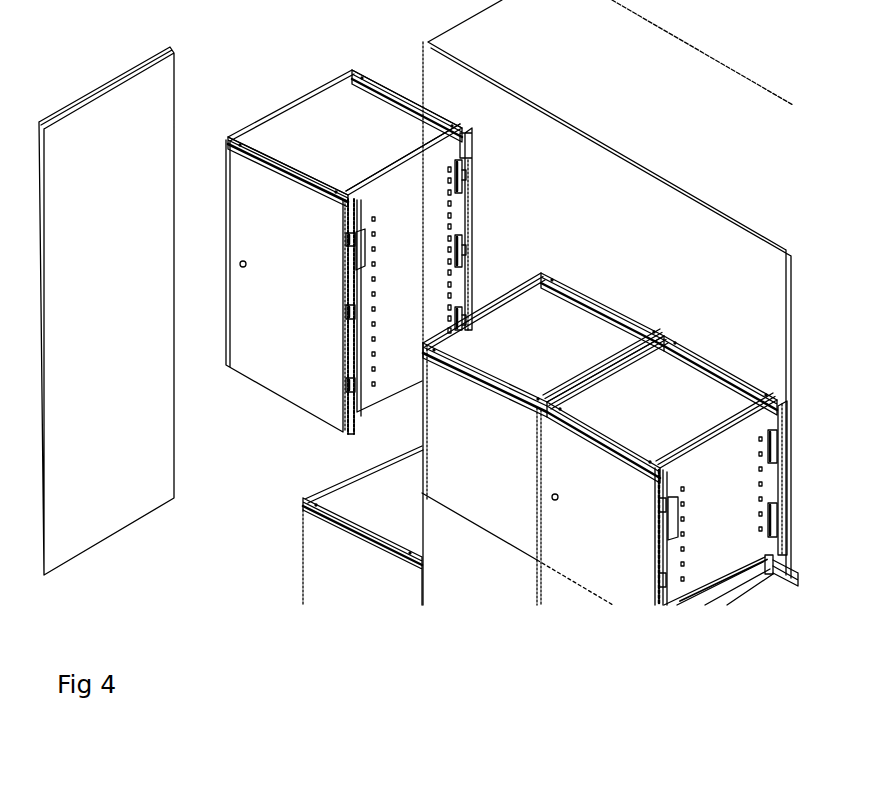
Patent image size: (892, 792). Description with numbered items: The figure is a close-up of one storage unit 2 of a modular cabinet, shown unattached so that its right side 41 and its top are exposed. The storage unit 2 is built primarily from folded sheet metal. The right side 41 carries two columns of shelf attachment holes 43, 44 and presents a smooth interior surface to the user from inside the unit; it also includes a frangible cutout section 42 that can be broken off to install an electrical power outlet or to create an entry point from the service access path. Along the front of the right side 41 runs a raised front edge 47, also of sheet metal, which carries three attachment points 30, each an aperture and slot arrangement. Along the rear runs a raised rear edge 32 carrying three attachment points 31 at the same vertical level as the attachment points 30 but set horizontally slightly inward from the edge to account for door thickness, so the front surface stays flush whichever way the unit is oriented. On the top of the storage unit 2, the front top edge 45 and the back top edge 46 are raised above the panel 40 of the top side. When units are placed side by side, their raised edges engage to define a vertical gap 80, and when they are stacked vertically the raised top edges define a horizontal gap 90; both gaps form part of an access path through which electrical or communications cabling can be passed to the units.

The storage unit 2 is at (233, 196).
The attachment points 30 is at (348, 381).
The attachment points 31 is at (464, 328).
The raised rear edge 32 is at (463, 128).
The panel 40 is at (383, 274).
The right side 41 is at (403, 205).
The frangible cutout section 42 is at (364, 228).
The shelf attachment holes 43 is at (377, 292).
The shelf attachment holes 44 is at (452, 247).
The front top edge 45 is at (288, 161).
The back top edge 46 is at (383, 103).
The raised front edge 47 is at (353, 430).
The vertical gap 80 is at (626, 357).
The horizontal gap 90 is at (740, 578).